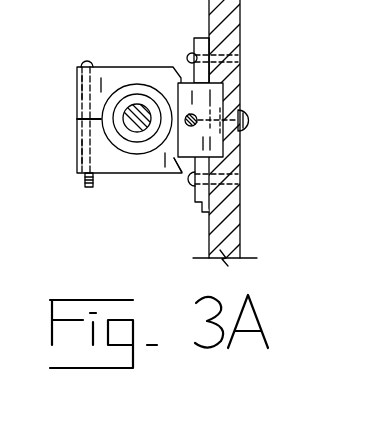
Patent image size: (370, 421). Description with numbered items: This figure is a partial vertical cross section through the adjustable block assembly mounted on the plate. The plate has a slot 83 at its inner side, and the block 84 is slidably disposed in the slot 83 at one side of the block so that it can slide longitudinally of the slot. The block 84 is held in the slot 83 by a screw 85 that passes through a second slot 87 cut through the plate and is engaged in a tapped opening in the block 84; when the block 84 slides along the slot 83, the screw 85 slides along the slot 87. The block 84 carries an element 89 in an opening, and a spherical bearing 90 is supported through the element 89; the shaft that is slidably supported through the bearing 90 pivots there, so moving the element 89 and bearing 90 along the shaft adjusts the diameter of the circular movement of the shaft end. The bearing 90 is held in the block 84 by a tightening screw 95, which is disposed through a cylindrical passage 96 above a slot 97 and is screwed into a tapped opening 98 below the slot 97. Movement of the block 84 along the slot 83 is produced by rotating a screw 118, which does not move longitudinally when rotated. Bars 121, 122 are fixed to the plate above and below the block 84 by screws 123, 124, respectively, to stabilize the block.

The slot 83 is at (224, 100).
The block 84 is at (183, 163).
The screw 85 is at (251, 121).
The slot through plate 87 is at (247, 152).
The element 89 is at (109, 176).
The spherical bearing 90 is at (137, 143).
The tightening screw 95 is at (89, 63).
The cylindrical passage 96 is at (80, 87).
The slot 97 is at (77, 119).
The tapped opening 98 is at (80, 152).
The screw 118 is at (164, 161).
The bar 121 is at (198, 38).
The bar 122 is at (243, 212).
The screw 123 is at (187, 57).
The screw 124 is at (191, 190).